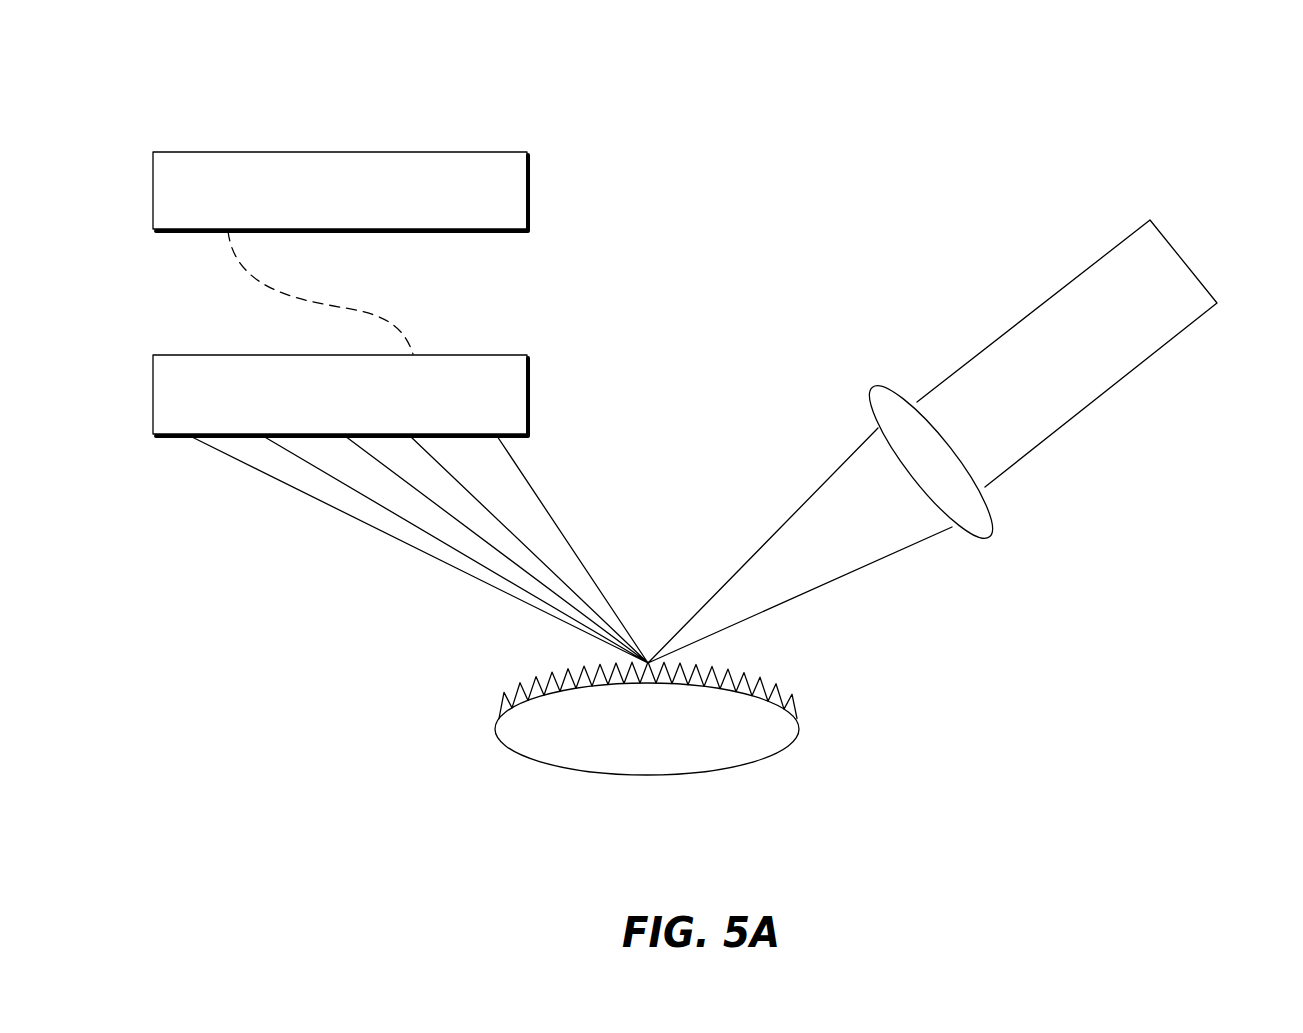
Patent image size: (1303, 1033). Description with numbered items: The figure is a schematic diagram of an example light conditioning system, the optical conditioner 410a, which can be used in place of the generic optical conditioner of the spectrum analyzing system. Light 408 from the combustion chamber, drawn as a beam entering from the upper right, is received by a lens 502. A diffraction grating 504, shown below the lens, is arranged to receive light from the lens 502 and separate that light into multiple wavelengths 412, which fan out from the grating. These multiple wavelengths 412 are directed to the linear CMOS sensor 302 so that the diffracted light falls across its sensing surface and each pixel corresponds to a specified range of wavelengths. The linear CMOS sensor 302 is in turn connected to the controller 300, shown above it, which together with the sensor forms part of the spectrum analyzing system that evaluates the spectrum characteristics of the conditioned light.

The controller 300 is at (318, 208).
The linear CMOS sensor 302 is at (318, 411).
The light 408 is at (1100, 397).
The optical conditioner 410a is at (1182, 116).
The multiple wavelengths 412 is at (336, 553).
The lens 502 is at (988, 537).
The diffraction grating 504 is at (645, 775).